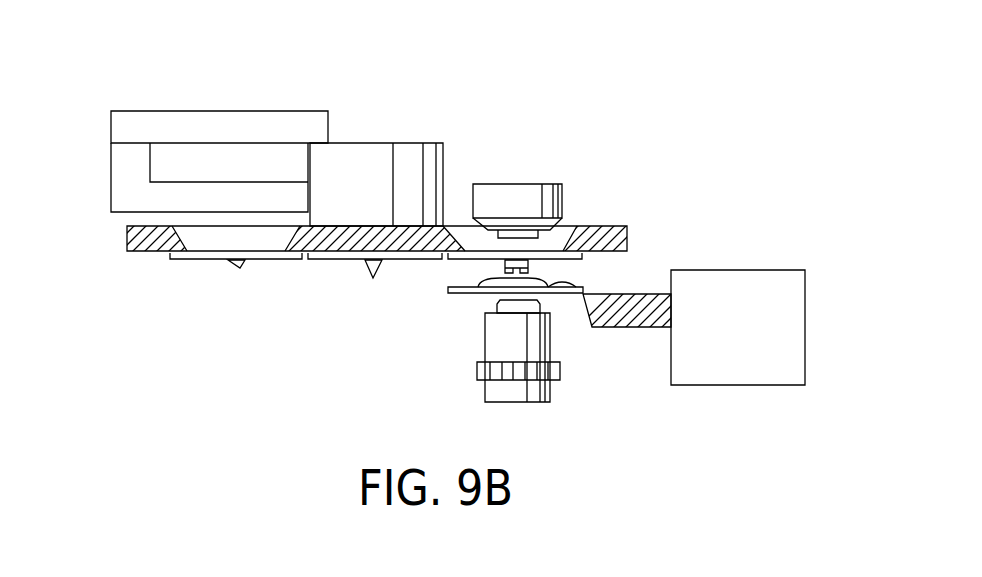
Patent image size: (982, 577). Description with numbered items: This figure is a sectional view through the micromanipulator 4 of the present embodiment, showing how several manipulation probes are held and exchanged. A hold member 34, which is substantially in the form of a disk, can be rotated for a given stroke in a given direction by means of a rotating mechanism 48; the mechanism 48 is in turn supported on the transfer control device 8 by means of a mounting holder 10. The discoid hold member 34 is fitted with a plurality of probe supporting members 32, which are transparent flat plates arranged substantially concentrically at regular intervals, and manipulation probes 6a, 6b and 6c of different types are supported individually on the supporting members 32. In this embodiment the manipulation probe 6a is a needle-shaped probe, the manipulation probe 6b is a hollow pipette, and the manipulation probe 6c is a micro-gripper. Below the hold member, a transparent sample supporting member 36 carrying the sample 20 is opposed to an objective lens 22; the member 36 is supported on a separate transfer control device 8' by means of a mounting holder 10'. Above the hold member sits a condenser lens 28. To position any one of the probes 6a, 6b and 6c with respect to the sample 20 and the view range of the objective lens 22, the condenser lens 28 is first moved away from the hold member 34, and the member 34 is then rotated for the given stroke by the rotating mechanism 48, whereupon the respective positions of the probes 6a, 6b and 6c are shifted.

The micromanipulator 4 is at (507, 115).
The transfer control device 8 is at (219, 136).
The mounting holder 10 is at (229, 121).
The rotating mechanism 48 is at (400, 143).
The condenser lens 28 is at (557, 184).
The manipulation probe 6c is at (502, 242).
The hold member 34 is at (127, 235).
The probe supporting members 32 is at (175, 259).
The manipulation probe 6a is at (237, 270).
The manipulation probe 6b is at (372, 280).
The sample supporting member 36 is at (462, 295).
The sample 20 is at (548, 278).
The objective lens 22 is at (552, 345).
The mounting holder 10' is at (643, 279).
The transfer control device 8' is at (738, 300).